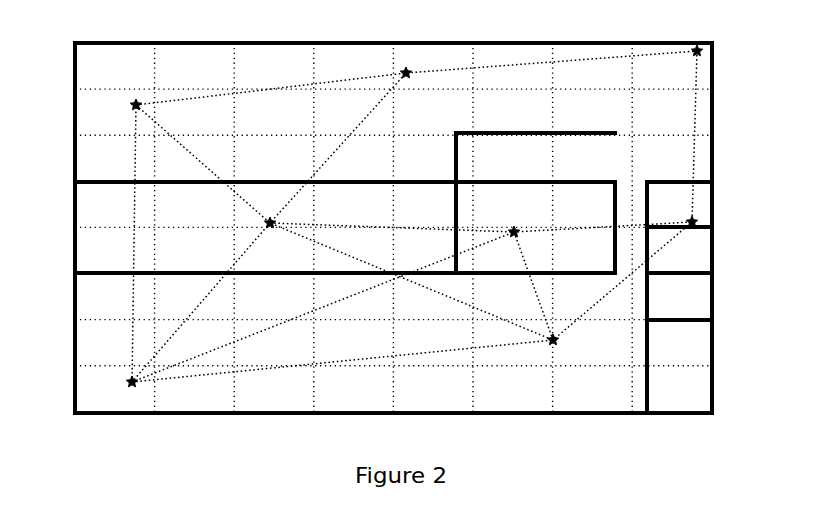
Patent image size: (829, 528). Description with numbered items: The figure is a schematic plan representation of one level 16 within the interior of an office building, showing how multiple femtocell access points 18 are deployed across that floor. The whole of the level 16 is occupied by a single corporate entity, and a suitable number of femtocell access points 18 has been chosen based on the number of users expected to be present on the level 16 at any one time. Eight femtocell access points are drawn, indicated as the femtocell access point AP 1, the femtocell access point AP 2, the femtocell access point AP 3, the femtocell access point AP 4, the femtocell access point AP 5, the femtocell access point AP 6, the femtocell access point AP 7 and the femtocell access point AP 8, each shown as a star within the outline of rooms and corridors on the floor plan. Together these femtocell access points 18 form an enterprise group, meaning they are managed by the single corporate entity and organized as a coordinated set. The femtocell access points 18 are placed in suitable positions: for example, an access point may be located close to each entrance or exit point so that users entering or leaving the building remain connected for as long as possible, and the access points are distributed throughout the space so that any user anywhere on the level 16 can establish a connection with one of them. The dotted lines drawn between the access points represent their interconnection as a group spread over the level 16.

The level 16 is at (712, 112).
The femtocell access points 18 is at (241, 208).
The femtocell access point AP1 1 is at (126, 393).
The femtocell access point AP2 2 is at (565, 353).
The femtocell access point AP3 3 is at (688, 236).
The femtocell access point AP4 4 is at (526, 246).
The femtocell access point AP5 5 is at (280, 236).
The femtocell access point AP6 6 is at (126, 117).
The femtocell access point AP7 7 is at (417, 86).
The femtocell access point AP8 8 is at (676, 63).